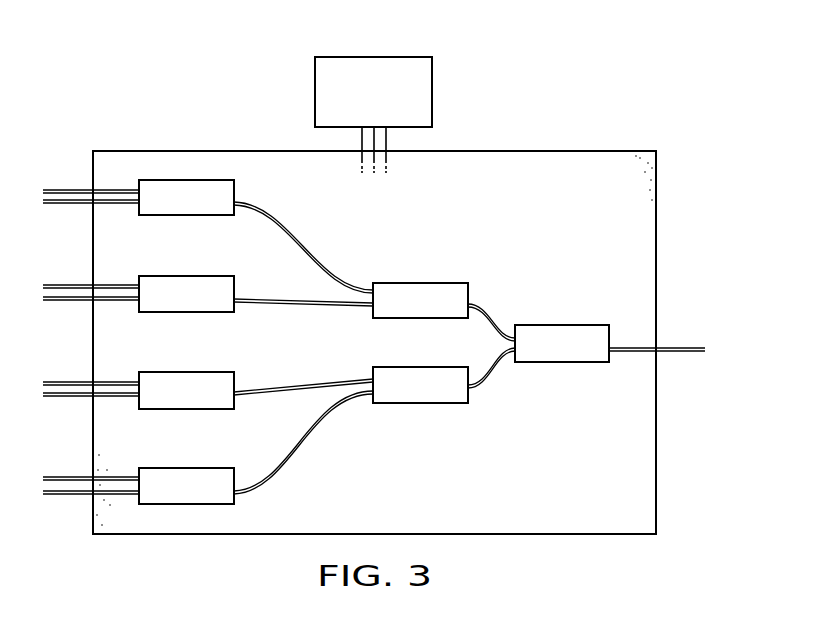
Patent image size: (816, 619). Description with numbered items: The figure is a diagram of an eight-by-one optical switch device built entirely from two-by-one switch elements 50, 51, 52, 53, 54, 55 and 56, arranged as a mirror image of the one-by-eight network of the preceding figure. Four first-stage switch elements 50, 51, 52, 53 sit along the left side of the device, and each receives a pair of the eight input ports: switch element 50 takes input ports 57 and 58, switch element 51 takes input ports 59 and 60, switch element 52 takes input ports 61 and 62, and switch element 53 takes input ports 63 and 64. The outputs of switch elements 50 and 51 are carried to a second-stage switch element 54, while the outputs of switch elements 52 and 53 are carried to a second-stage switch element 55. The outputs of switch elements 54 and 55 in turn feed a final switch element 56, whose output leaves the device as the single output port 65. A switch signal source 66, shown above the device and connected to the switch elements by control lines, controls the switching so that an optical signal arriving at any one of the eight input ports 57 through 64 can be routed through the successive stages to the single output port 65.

The 2-by-1 switch element 50 is at (183, 180).
The 2-by-1 switch element 51 is at (175, 276).
The 2-by-1 switch element 52 is at (175, 372).
The 2-by-1 switch element 53 is at (175, 468).
The 2-by-1 switch element 54 is at (410, 283).
The 2-by-1 switch element 55 is at (410, 367).
The 2-by-1 switch element 56 is at (548, 325).
The input port 57 is at (119, 185).
The input port 58 is at (117, 206).
The input port 59 is at (118, 282).
The input port 60 is at (117, 302).
The input port 61 is at (118, 379).
The input port 62 is at (117, 398).
The input port 63 is at (114, 476).
The input port 64 is at (112, 495).
The output port 65 is at (632, 346).
The switch signal source 66 is at (375, 56).